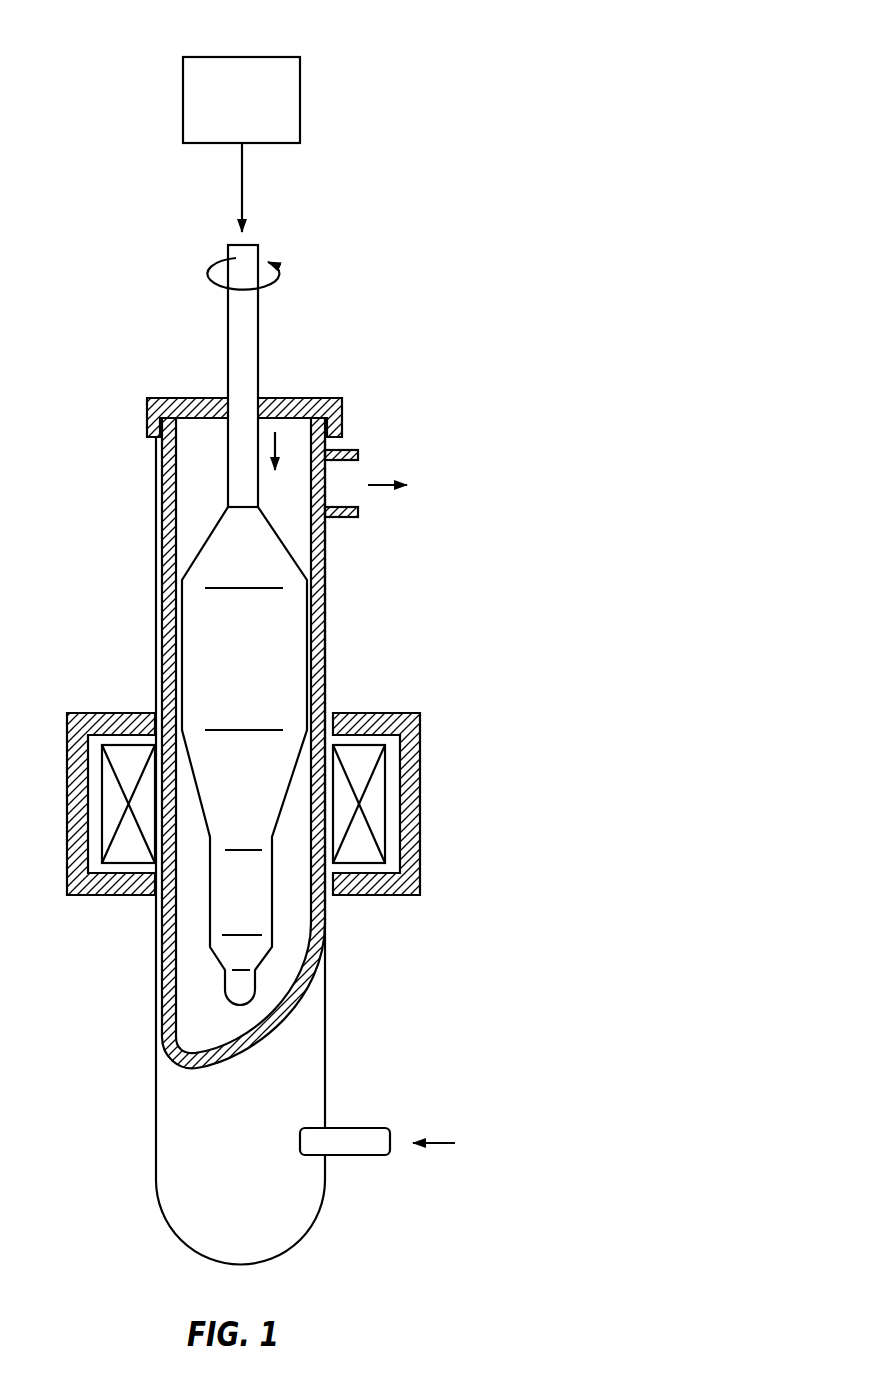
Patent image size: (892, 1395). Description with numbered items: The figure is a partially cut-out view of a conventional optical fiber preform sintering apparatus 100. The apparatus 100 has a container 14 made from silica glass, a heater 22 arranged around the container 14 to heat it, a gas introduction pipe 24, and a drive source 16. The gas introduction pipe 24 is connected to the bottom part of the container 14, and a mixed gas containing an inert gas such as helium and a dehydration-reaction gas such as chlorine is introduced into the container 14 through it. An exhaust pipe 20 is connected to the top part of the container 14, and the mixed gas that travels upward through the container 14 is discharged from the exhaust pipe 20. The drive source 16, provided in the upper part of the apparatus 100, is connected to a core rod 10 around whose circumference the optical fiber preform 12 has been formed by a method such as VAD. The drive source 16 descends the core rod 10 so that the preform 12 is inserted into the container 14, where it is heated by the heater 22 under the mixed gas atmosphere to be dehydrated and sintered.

The optical fiber preform sintering apparatus 100 is at (418, 28).
The core rod 10 is at (243, 348).
The optical fiber preform 12 is at (215, 548).
The container 14 is at (305, 1063).
The drive source 16 is at (183, 97).
The exhaust pipe 20 is at (345, 520).
The heater 22 is at (360, 755).
The gas introduction pipe 24 is at (365, 1146).